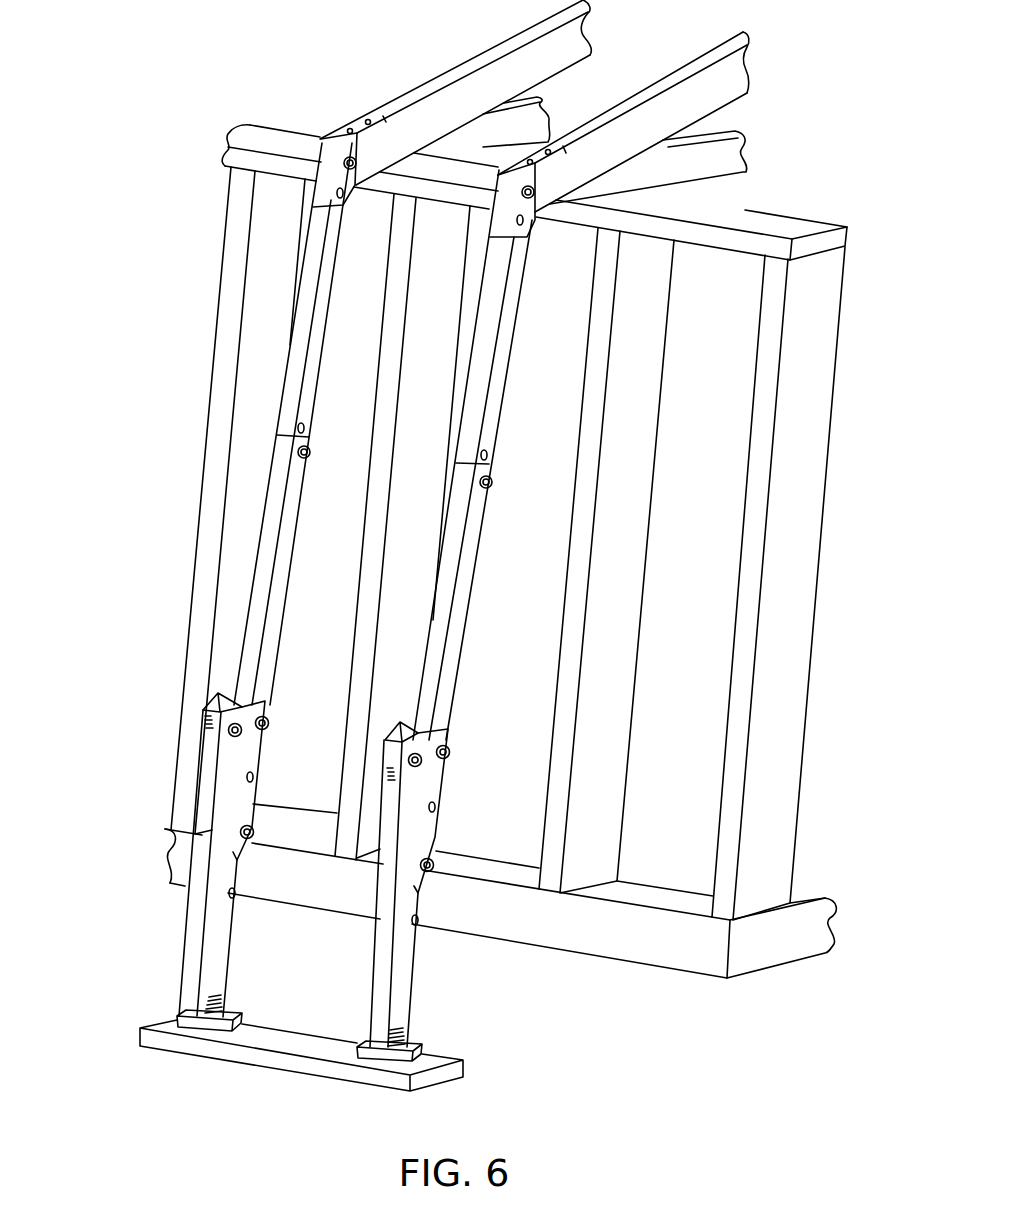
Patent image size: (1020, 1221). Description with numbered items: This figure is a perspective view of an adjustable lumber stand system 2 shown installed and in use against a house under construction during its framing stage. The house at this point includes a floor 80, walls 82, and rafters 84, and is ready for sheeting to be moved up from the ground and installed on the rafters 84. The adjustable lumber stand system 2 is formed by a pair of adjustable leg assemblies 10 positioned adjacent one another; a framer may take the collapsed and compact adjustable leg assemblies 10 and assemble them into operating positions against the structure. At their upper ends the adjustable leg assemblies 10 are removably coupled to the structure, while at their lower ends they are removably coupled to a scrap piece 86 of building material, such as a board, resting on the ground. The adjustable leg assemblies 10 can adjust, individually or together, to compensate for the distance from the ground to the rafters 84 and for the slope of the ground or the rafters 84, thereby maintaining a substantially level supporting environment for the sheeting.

The adjustable lumber stand system 2 is at (296, 612).
The adjustable leg assembly 10 is at (168, 903).
The floor 80 is at (807, 938).
The walls 82 is at (773, 780).
The rafters 84 is at (722, 82).
The scrap piece of building material 86 is at (155, 1038).